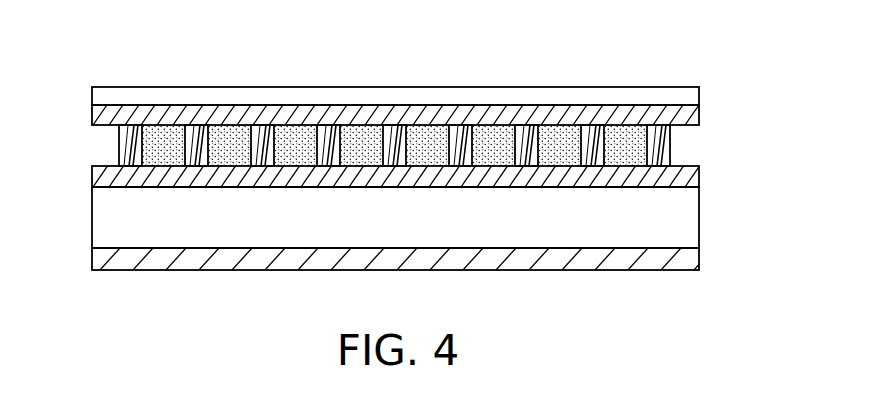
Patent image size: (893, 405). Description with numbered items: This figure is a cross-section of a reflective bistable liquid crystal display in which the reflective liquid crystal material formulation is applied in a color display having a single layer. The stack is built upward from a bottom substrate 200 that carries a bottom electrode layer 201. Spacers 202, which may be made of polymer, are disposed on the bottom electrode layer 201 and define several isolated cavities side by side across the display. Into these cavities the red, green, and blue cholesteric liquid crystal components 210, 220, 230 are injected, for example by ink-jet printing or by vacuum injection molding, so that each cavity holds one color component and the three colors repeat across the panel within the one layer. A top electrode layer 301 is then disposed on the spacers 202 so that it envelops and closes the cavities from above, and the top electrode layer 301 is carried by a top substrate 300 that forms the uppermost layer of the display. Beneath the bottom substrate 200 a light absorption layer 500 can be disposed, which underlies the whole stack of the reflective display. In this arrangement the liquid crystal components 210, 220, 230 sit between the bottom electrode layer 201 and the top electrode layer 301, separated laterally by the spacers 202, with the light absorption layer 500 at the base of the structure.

The bottom substrate 200 is at (700, 211).
The bottom electrode layer 201 is at (700, 177).
The spacers 202 is at (119, 150).
The red cholesteric liquid crystal component 210 is at (163, 133).
The green cholesteric liquid crystal component 220 is at (232, 133).
The blue cholesteric liquid crystal component 230 is at (298, 133).
The top substrate 300 is at (700, 96).
The top electrode layer 301 is at (700, 113).
The light absorption layer 500 is at (700, 259).